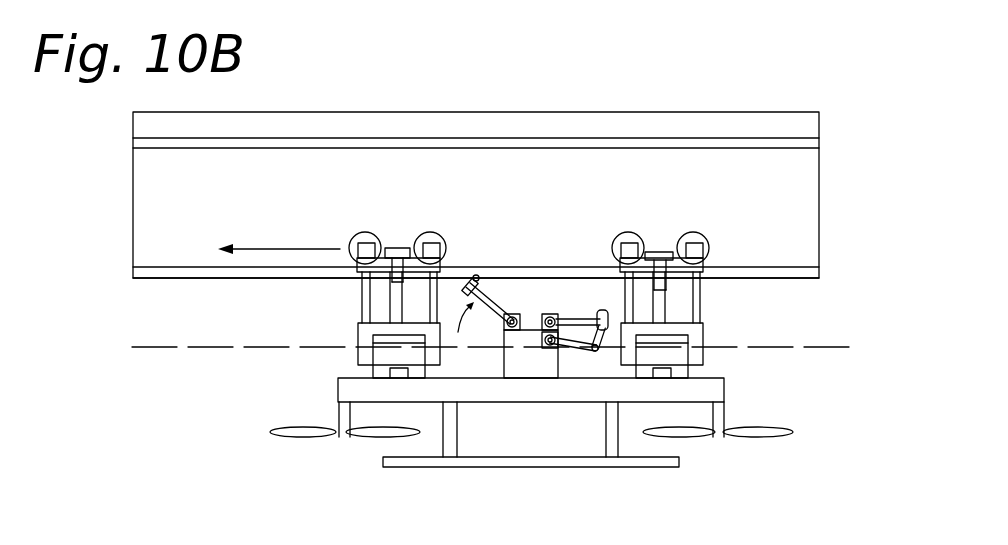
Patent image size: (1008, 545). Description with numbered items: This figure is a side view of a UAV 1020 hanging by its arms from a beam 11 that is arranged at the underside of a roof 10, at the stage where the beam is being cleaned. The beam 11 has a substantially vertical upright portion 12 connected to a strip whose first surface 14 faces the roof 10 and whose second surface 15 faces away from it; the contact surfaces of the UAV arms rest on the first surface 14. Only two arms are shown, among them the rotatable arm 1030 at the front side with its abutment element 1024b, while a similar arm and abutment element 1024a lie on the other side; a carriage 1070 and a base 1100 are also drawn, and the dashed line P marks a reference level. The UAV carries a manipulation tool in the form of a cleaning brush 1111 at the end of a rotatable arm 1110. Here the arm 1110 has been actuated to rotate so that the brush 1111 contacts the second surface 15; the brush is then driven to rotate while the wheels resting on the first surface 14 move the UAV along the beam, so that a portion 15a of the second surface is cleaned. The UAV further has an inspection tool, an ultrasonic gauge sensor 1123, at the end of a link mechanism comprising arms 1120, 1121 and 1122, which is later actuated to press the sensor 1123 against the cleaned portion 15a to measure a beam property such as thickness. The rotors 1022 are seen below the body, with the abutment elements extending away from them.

The roof 10 is at (712, 123).
The beam 11 is at (513, 181).
The upright portion 12 is at (795, 195).
The first surface 14 is at (765, 267).
The second surface 15 is at (767, 276).
The cleaned portion 15a is at (476, 274).
The reference plane P is at (153, 347).
The UAV 1020 is at (481, 334).
The rotors 1022 is at (295, 435).
The first bracket 1024a is at (436, 289).
The front side abutment element 1024b is at (365, 310).
The rotatable arm 1030 is at (398, 262).
The roller carriage 1070 is at (658, 288).
The base block 1100 is at (523, 365).
The rotatable arm 1110 is at (494, 297).
The cleaning brush 1111 is at (462, 273).
The arm 1120 is at (570, 300).
The arm 1121 is at (567, 342).
The arm 1122 is at (604, 335).
The ultrasonic gauge sensor 1123 is at (598, 310).